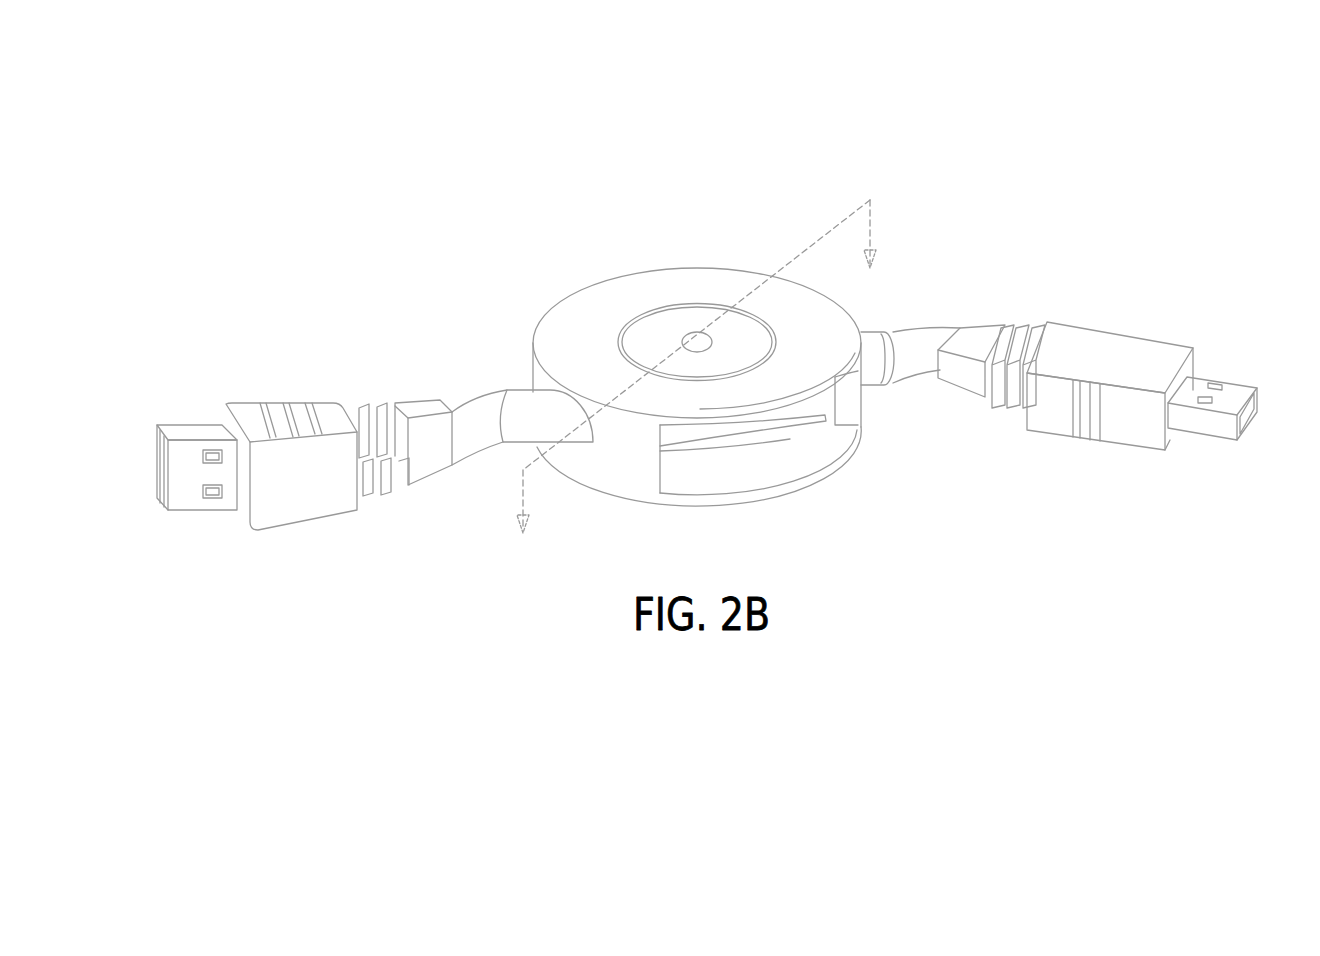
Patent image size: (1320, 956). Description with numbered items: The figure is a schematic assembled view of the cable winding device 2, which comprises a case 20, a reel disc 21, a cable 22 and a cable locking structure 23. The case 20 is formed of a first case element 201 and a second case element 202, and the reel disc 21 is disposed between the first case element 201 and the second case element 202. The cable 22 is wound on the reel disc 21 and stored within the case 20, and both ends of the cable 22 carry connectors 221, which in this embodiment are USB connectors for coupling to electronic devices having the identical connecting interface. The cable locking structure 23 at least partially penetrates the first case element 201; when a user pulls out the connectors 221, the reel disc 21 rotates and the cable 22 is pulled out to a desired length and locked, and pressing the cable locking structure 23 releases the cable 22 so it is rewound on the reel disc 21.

The cable winding device 2 is at (1134, 103).
The case 20 is at (594, 284).
The first case element 201 is at (705, 276).
The second case element 202 is at (730, 495).
The reel disc 21 is at (766, 427).
The cable 22 is at (468, 407).
The connectors 221 is at (428, 420).
The cable locking structure 23 is at (669, 320).